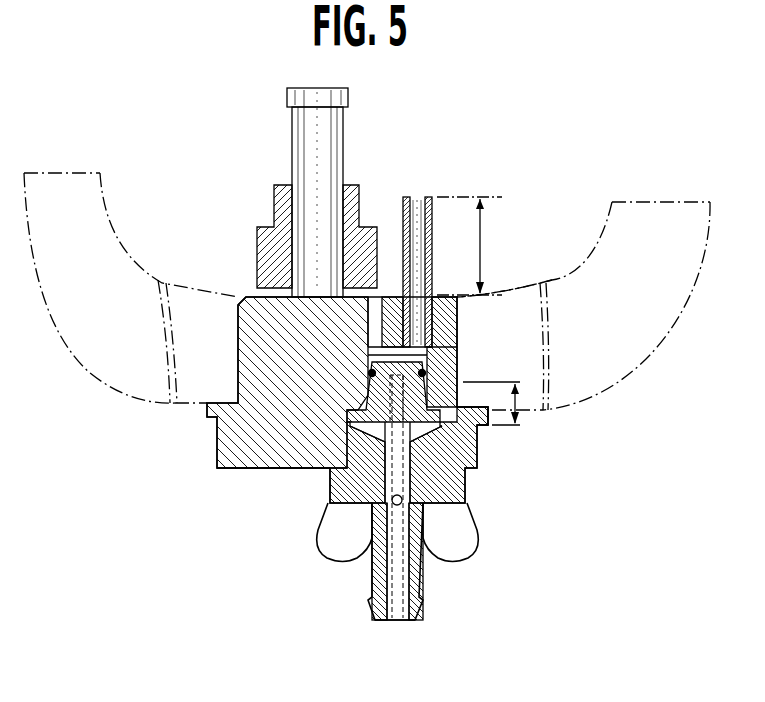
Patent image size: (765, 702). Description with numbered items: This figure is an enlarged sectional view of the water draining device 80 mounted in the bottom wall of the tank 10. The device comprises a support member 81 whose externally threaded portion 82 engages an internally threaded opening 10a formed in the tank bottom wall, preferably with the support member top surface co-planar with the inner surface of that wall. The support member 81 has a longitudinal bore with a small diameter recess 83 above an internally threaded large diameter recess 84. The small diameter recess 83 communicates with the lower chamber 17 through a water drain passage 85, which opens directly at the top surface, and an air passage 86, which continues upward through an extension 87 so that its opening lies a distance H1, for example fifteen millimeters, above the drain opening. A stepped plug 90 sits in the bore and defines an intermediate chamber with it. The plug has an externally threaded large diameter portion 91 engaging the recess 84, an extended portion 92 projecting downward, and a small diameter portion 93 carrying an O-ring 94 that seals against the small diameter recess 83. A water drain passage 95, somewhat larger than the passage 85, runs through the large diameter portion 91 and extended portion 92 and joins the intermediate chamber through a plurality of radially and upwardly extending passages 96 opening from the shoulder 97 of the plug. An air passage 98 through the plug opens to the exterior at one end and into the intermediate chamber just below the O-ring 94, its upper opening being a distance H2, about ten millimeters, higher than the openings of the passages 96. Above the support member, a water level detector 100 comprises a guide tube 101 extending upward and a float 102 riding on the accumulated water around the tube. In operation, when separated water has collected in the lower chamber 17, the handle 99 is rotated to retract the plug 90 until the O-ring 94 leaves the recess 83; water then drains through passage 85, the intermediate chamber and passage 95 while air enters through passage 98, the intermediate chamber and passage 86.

The tank 10 is at (647, 370).
The internally threaded opening 10a is at (213, 314).
The lower chamber 17 is at (572, 250).
The water draining device 80 is at (212, 480).
The support member 81 is at (259, 470).
The externally threaded portion 82 is at (246, 382).
The small diameter recess 83 is at (451, 352).
The large diameter recess 84 is at (333, 472).
The water drain passage 85 is at (380, 320).
The air passage 86 is at (423, 252).
The extension 87 is at (431, 249).
The stepped plug 90 is at (402, 525).
The large diameter portion 91 is at (418, 476).
The extended portion 92 is at (434, 525).
The small diameter portion 93 is at (348, 386).
The O-ring 94 is at (369, 373).
The water drain passage 95 is at (399, 621).
The radially and upwardly extending passages 96 is at (440, 438).
The shoulder 97 is at (415, 433).
The air passage 98 is at (478, 548).
The handle 99 is at (332, 537).
The water level detector 100 is at (313, 192).
The guide tube 101 is at (307, 153).
The float 102 is at (266, 246).
The length of extension H1 is at (482, 248).
The distance between air passage opening and radial passage openings H2 is at (517, 402).